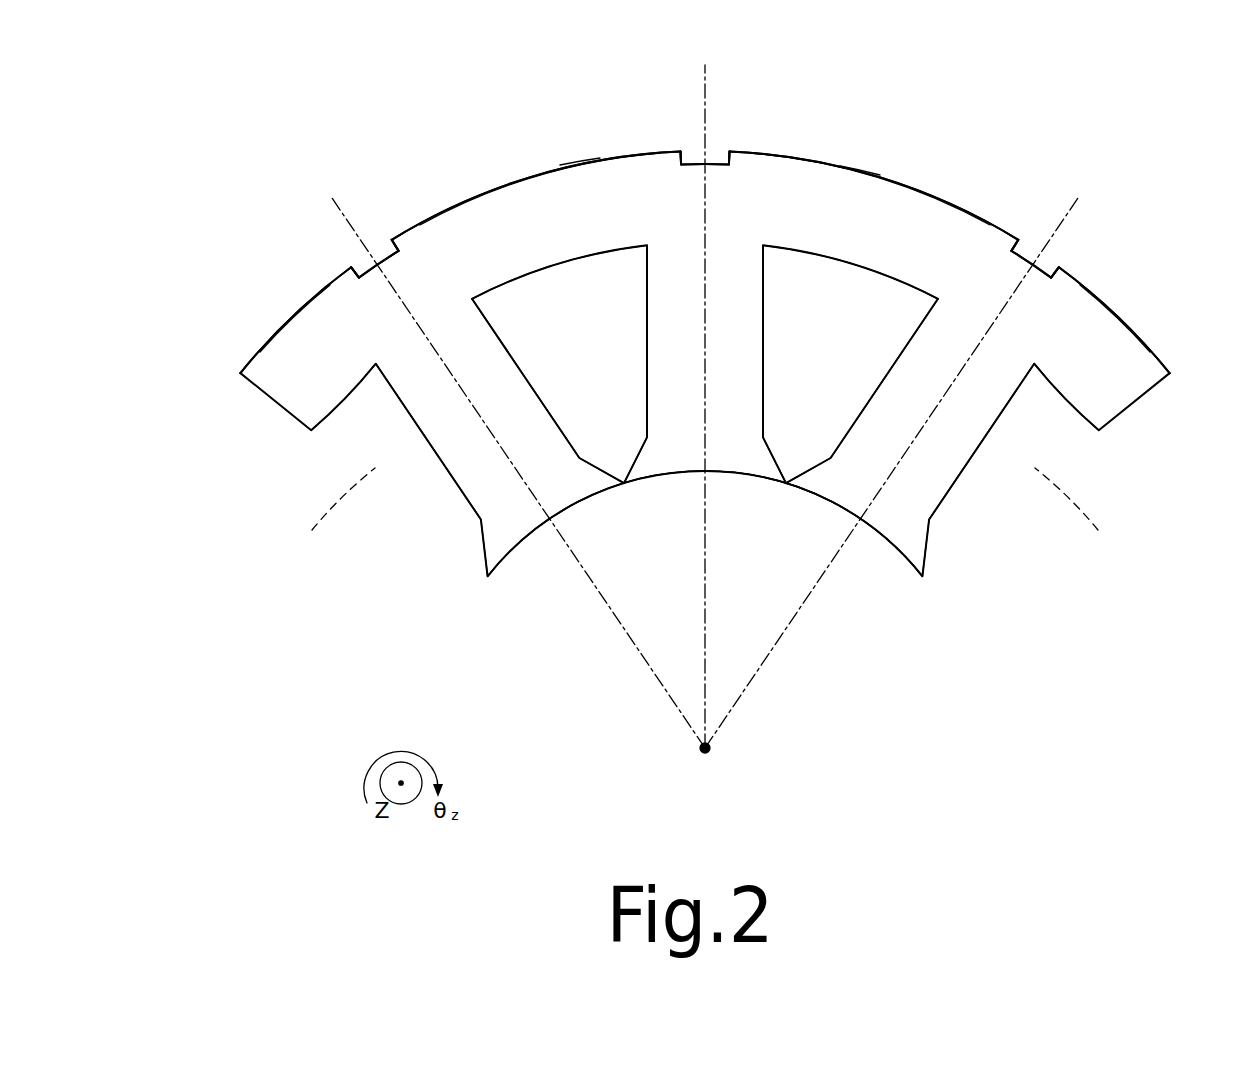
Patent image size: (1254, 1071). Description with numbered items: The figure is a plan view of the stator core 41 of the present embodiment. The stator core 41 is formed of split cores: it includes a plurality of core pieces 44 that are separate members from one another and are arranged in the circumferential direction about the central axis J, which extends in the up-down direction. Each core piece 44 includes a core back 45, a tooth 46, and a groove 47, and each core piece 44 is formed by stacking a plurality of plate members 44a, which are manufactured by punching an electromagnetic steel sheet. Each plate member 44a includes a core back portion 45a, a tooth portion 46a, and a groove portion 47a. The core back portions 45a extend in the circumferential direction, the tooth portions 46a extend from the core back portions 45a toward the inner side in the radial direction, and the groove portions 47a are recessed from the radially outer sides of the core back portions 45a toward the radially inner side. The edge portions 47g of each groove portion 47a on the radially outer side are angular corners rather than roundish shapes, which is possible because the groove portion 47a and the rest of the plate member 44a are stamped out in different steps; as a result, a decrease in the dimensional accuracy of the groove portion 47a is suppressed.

The stator core 41 is at (1084, 104).
The core piece 44 is at (456, 194).
The plate member 44a is at (511, 199).
The core back 45 is at (290, 327).
The core back portion 45a is at (237, 275).
The tooth 46 is at (477, 500).
The tooth portion 46a is at (448, 560).
The groove 47 is at (357, 265).
The groove portion 47a is at (285, 225).
The edge portion 47g is at (393, 242).
The central axis J is at (712, 748).